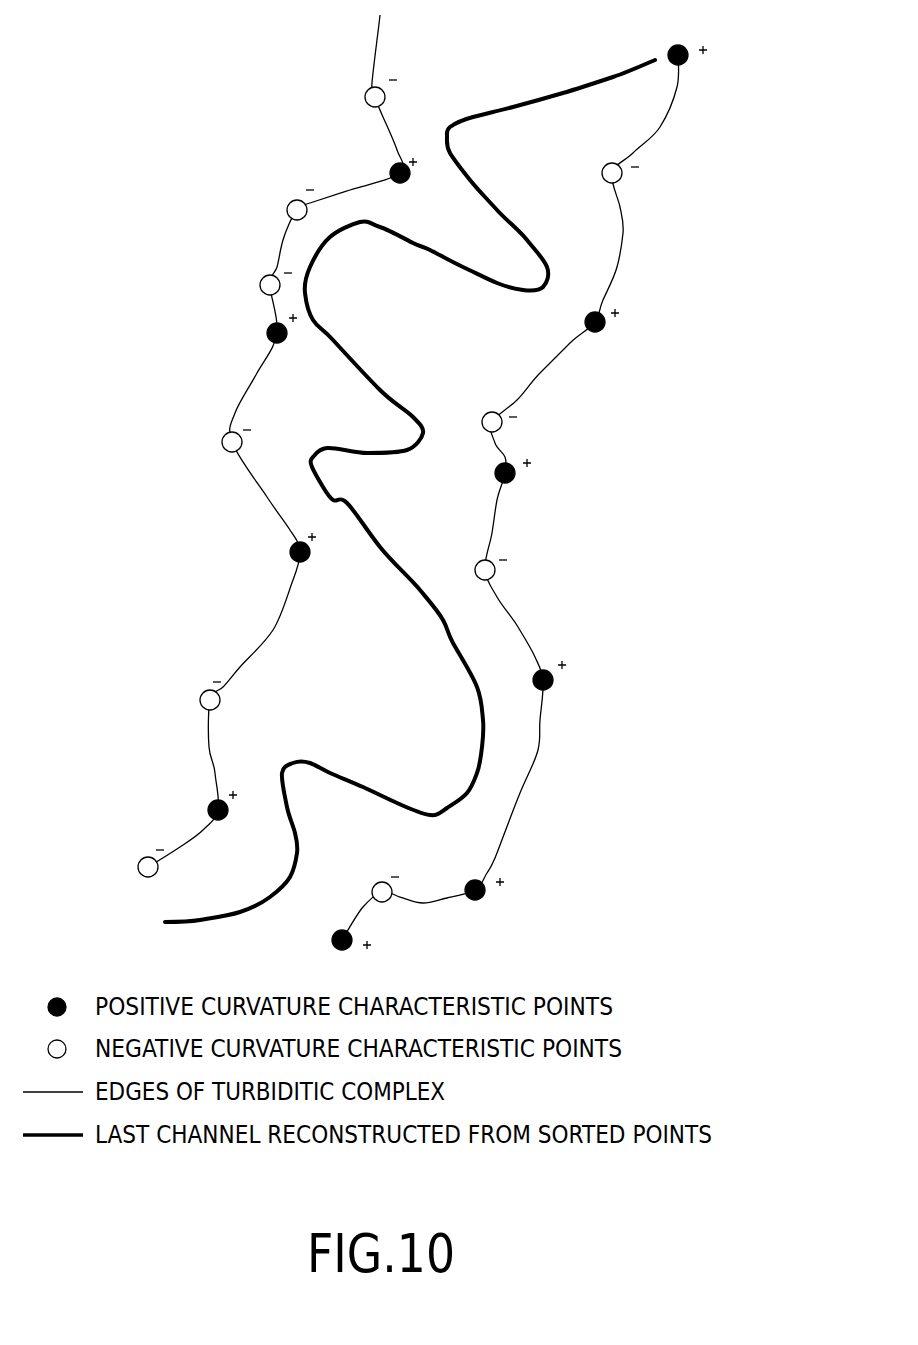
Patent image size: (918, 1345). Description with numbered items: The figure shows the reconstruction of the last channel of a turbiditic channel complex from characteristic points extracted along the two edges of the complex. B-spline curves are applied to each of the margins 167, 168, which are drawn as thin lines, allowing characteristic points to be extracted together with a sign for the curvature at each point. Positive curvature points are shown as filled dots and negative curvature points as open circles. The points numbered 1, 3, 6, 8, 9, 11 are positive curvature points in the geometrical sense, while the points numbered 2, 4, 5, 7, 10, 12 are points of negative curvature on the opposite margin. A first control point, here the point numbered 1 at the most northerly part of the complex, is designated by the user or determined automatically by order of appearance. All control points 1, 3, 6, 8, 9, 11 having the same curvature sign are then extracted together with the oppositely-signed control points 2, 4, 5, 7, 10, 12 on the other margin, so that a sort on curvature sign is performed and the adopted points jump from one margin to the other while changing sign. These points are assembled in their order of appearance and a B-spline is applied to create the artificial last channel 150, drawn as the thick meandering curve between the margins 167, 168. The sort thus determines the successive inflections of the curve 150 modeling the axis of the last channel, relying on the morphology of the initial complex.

The positive curvature characteristic point 1 is at (685, 40).
The negative curvature characteristic point 2 is at (374, 85).
The positive curvature characteristic point 3 is at (608, 335).
The negative curvature characteristic point 4 is at (295, 196).
The negative curvature characteristic point 5 is at (267, 273).
The positive curvature characteristic point 6 is at (513, 485).
The negative curvature characteristic point 7 is at (225, 439).
The positive curvature characteristic point 8 is at (555, 687).
The positive curvature characteristic point 9 is at (493, 902).
The negative curvature characteristic point 10 is at (199, 692).
The positive curvature characteristic point 11 is at (371, 950).
The negative curvature characteristic point 12 is at (134, 867).
The last channel axis 150 is at (475, 787).
The margin of the complex 167 is at (270, 633).
The margin of the complex 168 is at (518, 627).